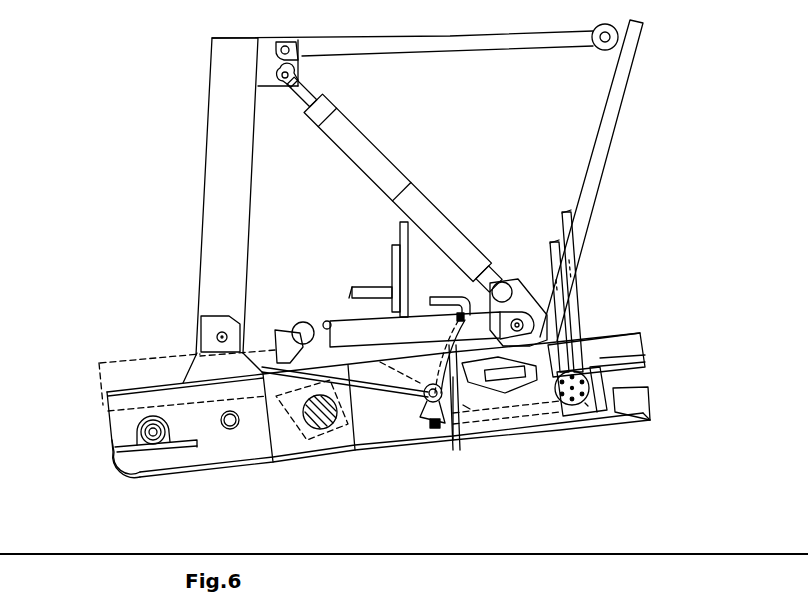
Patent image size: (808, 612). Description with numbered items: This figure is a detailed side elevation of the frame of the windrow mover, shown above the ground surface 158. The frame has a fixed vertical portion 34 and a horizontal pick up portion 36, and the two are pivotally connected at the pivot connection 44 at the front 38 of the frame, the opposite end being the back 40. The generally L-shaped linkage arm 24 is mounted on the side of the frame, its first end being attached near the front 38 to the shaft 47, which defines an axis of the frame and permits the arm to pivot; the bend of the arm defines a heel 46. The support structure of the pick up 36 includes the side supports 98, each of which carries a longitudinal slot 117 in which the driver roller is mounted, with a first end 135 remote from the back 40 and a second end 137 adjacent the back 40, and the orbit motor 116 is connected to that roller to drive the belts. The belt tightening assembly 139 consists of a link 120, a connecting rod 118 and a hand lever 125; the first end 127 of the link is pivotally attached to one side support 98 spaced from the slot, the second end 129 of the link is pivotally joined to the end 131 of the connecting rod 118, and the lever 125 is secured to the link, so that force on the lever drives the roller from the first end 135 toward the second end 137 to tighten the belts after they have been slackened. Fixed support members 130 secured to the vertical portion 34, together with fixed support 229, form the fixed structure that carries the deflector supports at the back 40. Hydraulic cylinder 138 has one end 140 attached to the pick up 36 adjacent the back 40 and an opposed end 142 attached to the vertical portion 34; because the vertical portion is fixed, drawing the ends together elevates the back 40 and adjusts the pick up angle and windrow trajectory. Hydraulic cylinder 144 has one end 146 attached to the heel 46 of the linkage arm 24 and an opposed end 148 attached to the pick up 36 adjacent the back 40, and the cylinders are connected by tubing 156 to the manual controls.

The linkage arm 24 is at (345, 405).
The vertical portion 34 is at (149, 210).
The horizontal pick up portion 36 is at (668, 317).
The front 38 is at (139, 435).
The back 40 is at (642, 345).
The pivot connection 44 is at (217, 337).
The heel 46 is at (169, 321).
The shaft 47 is at (328, 436).
The side support 98 is at (674, 409).
The orbit motor 116 is at (666, 451).
The longitudinal slot 117 is at (635, 378).
The connecting rod 118 is at (474, 456).
The link 120 is at (398, 454).
The hand lever 125 is at (395, 315).
The first end 127 is at (402, 353).
The second end 129 is at (348, 461).
The fixed support member 130 is at (477, 67).
The connecting rod end / movable support member 131 is at (483, 435).
The first end of slot 135 is at (695, 440).
The second end of slot 137 is at (643, 362).
The hydraulic cylinder 138 is at (337, 125).
The belt tightening assembly 139 is at (605, 468).
The cylinder end 140 is at (618, 272).
The opposed cylinder end 142 is at (337, 73).
The hydraulic cylinder 144 is at (374, 263).
The cylinder end 146 is at (175, 292).
The opposed cylinder end 148 is at (604, 314).
The tubing 156 is at (385, 255).
The ground surface 158 is at (404, 544).
The fixed support 229 is at (641, 180).